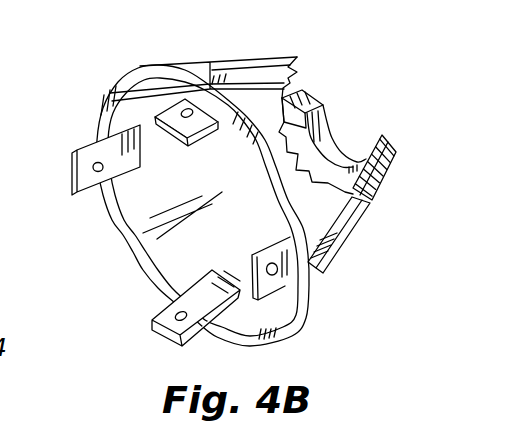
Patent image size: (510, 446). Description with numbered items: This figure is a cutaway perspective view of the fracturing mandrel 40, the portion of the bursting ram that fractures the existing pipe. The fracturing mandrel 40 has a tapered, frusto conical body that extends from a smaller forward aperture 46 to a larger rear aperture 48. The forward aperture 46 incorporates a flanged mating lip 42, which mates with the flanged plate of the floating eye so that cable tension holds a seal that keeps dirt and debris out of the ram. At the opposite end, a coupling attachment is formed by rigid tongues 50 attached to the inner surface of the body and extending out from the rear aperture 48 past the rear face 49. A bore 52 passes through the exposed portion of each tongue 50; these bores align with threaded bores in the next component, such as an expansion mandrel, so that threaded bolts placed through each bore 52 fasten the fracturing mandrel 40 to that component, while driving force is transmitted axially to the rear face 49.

The fracturing mandrel 40 is at (312, 70).
The mating lip 42 is at (326, 134).
The forward aperture 46 is at (349, 148).
The rear aperture 48 is at (137, 215).
The rear face 49 is at (100, 112).
The tongue 50 is at (140, 87).
The bore 52 is at (187, 112).